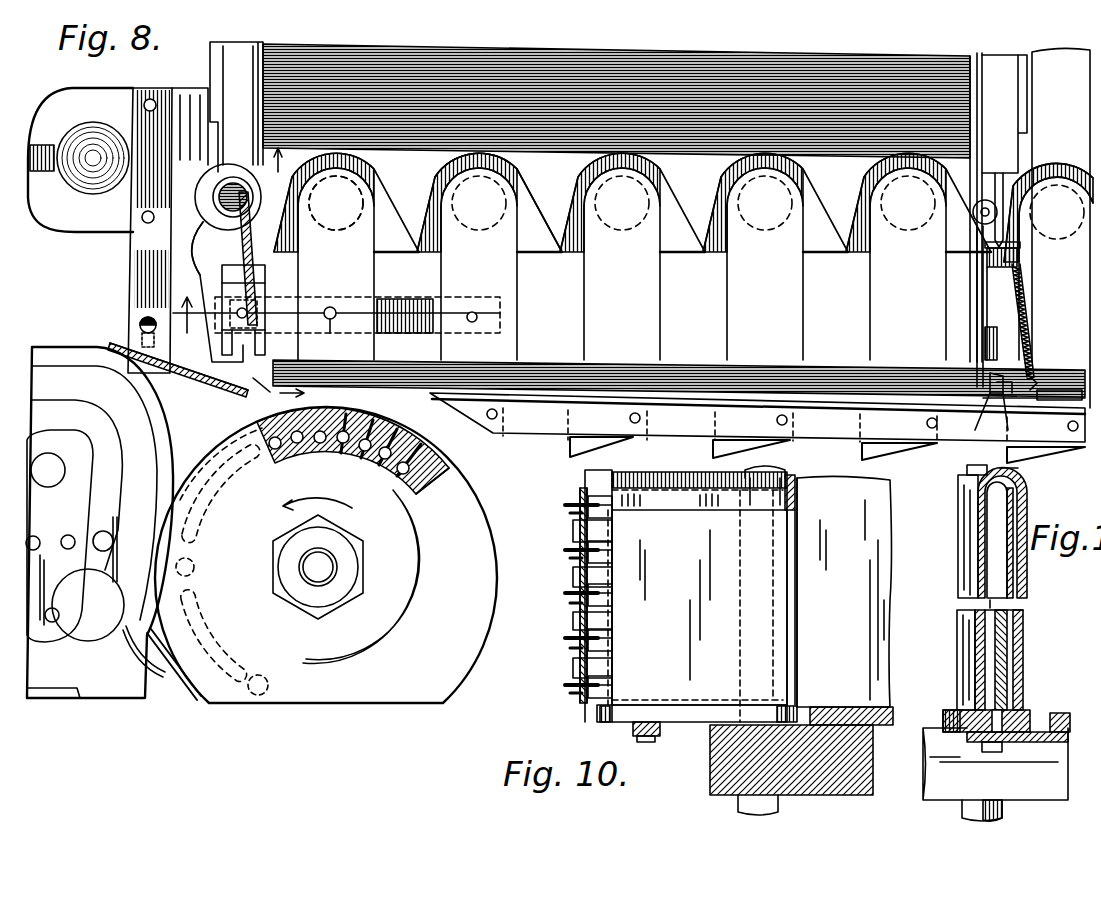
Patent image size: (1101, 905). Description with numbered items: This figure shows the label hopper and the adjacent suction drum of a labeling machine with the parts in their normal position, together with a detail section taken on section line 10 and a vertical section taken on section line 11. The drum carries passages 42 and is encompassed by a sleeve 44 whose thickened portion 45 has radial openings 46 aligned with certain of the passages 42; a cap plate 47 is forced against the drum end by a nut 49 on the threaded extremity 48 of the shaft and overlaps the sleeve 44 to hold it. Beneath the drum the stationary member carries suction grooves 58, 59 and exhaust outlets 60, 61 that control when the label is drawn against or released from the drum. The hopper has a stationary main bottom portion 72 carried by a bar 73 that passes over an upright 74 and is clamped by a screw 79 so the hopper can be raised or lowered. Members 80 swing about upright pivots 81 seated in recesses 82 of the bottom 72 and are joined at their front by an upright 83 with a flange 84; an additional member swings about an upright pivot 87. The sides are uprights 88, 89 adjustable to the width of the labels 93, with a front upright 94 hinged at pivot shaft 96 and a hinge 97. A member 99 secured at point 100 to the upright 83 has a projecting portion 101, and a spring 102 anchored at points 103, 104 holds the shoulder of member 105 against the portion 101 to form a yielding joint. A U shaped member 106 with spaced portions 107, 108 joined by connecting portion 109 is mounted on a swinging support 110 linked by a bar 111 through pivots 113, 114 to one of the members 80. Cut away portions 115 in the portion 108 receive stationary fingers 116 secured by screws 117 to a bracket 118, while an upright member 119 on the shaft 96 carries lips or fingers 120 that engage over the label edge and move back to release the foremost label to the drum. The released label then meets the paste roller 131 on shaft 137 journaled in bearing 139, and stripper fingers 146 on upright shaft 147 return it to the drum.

In FIG. 8, the section line 10— 10 is at (284, 279).
In FIG. 8, the section line 11— 11 is at (189, 322).
In FIG. 8, the passages 42 is at (343, 457).
In FIG. 8, the sleeve 44 is at (255, 425).
In FIG. 8, the thickened portion 45 is at (403, 395).
In FIG. 8, the radial openings 46 is at (438, 448).
In FIG. 8, the cap plate 47 is at (450, 516).
In FIG. 8, the threaded extremity 48 is at (325, 558).
In FIG. 8, the nut 49 is at (350, 576).
In FIG. 8, the suction groove 58 is at (210, 518).
In FIG. 8, the suction groove 59 is at (237, 665).
In FIG. 8, the exhaust outlet 60 is at (194, 567).
In FIG. 8, the exhaust outlet 61 is at (270, 685).
In FIG. 8, the main bottom portion 72 is at (1003, 83).
In FIG. 10, the main bottom portion 72 is at (847, 707).
In FIG. 8, the bar 73 is at (188, 100).
In FIG. 10, the bar 73 is at (710, 788).
In FIG. 8, the upright 74 is at (80, 132).
In FIG. 8, the screw or bolt 79 is at (28, 158).
In FIG. 8, the members 80 is at (720, 340).
In FIG. 8, the upright pivots 81 is at (490, 205).
In FIG. 8, the recesses 82 is at (527, 226).
In FIG. 10, the recesses 82 is at (813, 703).
In FIG. 8, the upright 83 is at (838, 408).
In FIG. 8, the flange 84 is at (683, 430).
In FIG. 8, the upright pivot 87 is at (355, 203).
In FIG. 8, the upright side 88 is at (262, 62).
In FIG. 8, the upright side 89 is at (978, 60).
In FIG. 8, the labels 93 is at (656, 62).
In FIG. 8, the upright 94 is at (984, 343).
In FIG. 8, the pivot shaft 96 is at (237, 185).
In FIG. 10, the pivot shaft 96 is at (776, 478).
In FIG. 11, the pivot shaft 96 is at (967, 472).
In FIG. 8, the hinge 97 is at (990, 200).
In FIG. 8, the member 99 is at (1050, 378).
In FIG. 8, the securing point 100 is at (1023, 306).
In FIG. 8, the laterally projecting portion 101 is at (985, 400).
In FIG. 8, the spring 102 is at (1030, 299).
In FIG. 8, the spring anchor 103 is at (1022, 252).
In FIG. 8, the spring anchor 104 is at (985, 370).
In FIG. 8, the shouldered member 105 is at (1010, 357).
In FIG. 8, the U shaped member 106 is at (215, 190).
In FIG. 10, the U shaped member 106 is at (795, 485).
In FIG. 11, the U shaped member 106 is at (962, 532).
In FIG. 8, the spaced portion 107 is at (232, 244).
In FIG. 10, the spaced portion 107 is at (690, 483).
In FIG. 11, the spaced portion 107 is at (980, 578).
In FIG. 8, the spaced portion 108 is at (265, 260).
In FIG. 10, the spaced portion 108 is at (688, 690).
In FIG. 11, the spaced portion 108 is at (1028, 578).
In FIG. 8, the connecting portion 109 is at (265, 280).
In FIG. 11, the connecting portion 109 is at (1012, 470).
In FIG. 8, the swinging support 110 is at (207, 256).
In FIG. 10, the swinging support 110 is at (610, 724).
In FIG. 11, the swinging support 110 is at (1030, 716).
In FIG. 8, the connecting bar 111 is at (405, 305).
In FIG. 10, the connecting bar 111 is at (636, 735).
In FIG. 8, the pivot 113 is at (329, 331).
In FIG. 8, the pivot 114 is at (178, 370).
In FIG. 10, the cut away portions 115 is at (610, 558).
In FIG. 8, the stationary fingers 116 is at (205, 376).
In FIG. 10, the stationary fingers 116 is at (580, 515).
In FIG. 8, the fastening screws 117 is at (140, 322).
In FIG. 8, the arm or bracket 118 is at (140, 260).
In FIG. 10, the arm or bracket 118 is at (582, 492).
In FIG. 8, the upright member 119 is at (247, 232).
In FIG. 11, the upright member 119 is at (1012, 626).
In FIG. 8, the lips or fingers 120 is at (265, 396).
In FIG. 10, the lips or fingers 120 is at (606, 538).
In FIG. 8, the paste roller 131 is at (76, 698).
In FIG. 8, the shaft 137 is at (50, 455).
In FIG. 8, the bearing 139 is at (74, 521).
In FIG. 8, the stripper fingers 146 is at (125, 650).
In FIG. 8, the upright shaft 147 is at (110, 540).